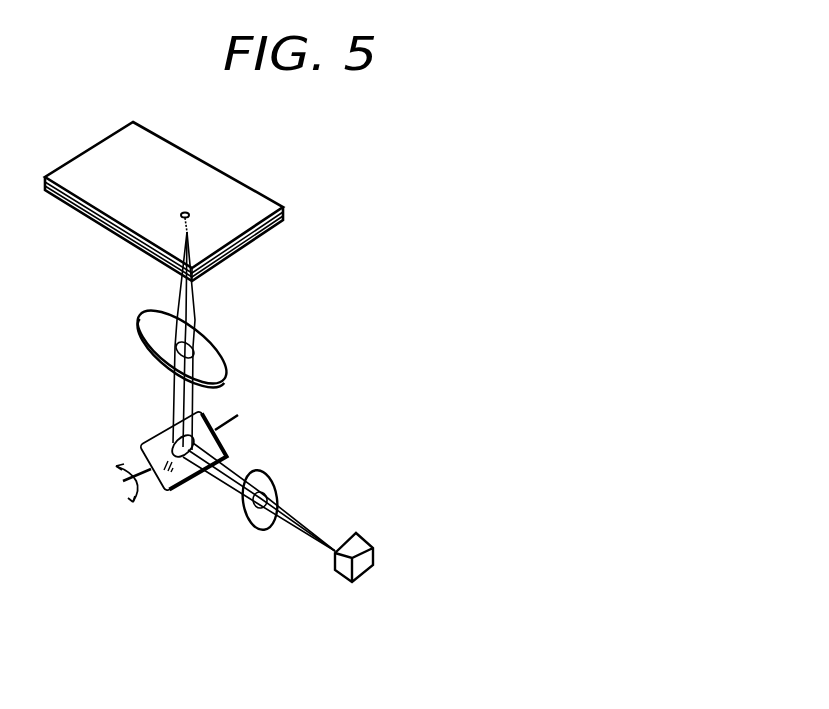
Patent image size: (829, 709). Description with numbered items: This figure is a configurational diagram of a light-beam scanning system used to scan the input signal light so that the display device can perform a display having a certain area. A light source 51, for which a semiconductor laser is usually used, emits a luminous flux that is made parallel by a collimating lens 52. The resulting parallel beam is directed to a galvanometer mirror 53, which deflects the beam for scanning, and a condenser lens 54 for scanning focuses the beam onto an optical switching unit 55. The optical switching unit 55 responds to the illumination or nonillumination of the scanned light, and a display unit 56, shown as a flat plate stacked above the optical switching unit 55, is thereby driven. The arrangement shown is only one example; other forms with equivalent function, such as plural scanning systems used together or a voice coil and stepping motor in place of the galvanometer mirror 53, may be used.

The light source 51 is at (374, 548).
The collimating lens 52 is at (273, 478).
The galvanometer mirror 53 is at (178, 486).
The condenser lens for scanning 54 is at (223, 350).
The optical switching unit 55 is at (284, 212).
The display unit 56 is at (284, 207).